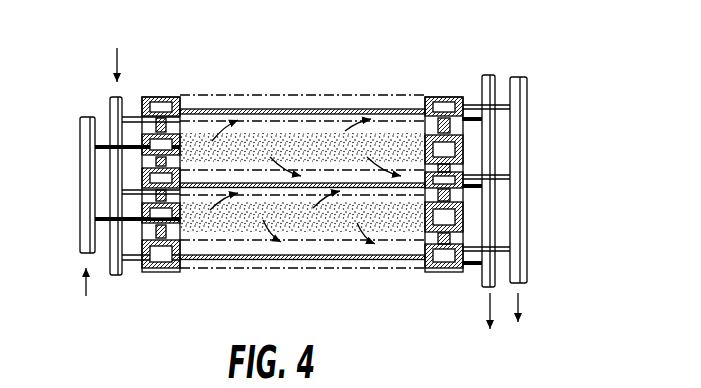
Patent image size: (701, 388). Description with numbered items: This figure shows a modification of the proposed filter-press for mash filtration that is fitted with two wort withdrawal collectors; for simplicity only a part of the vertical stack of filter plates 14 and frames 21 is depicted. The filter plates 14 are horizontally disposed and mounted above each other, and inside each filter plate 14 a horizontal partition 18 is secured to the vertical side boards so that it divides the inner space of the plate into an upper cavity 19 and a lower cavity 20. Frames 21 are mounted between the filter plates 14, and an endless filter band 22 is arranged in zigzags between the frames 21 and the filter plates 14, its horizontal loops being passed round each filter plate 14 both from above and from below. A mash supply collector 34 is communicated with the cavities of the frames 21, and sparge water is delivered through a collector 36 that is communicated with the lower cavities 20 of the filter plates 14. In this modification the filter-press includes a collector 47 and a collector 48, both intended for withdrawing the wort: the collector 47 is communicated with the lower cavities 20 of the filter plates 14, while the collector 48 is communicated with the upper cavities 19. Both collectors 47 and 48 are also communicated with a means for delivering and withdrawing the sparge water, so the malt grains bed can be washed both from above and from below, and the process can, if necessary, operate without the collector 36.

The filter plate 14 is at (166, 95).
The horizontal partition 18 is at (258, 109).
The upper cavity 19 is at (332, 250).
The lower cavity 20 is at (251, 263).
The frame 21 is at (418, 140).
The endless filter band 22 is at (393, 272).
The mash supply collector 34 is at (98, 258).
The sparge water collector 36 is at (112, 112).
The wort withdrawing collector 47 is at (487, 277).
The wort withdrawing collector 48 is at (522, 124).